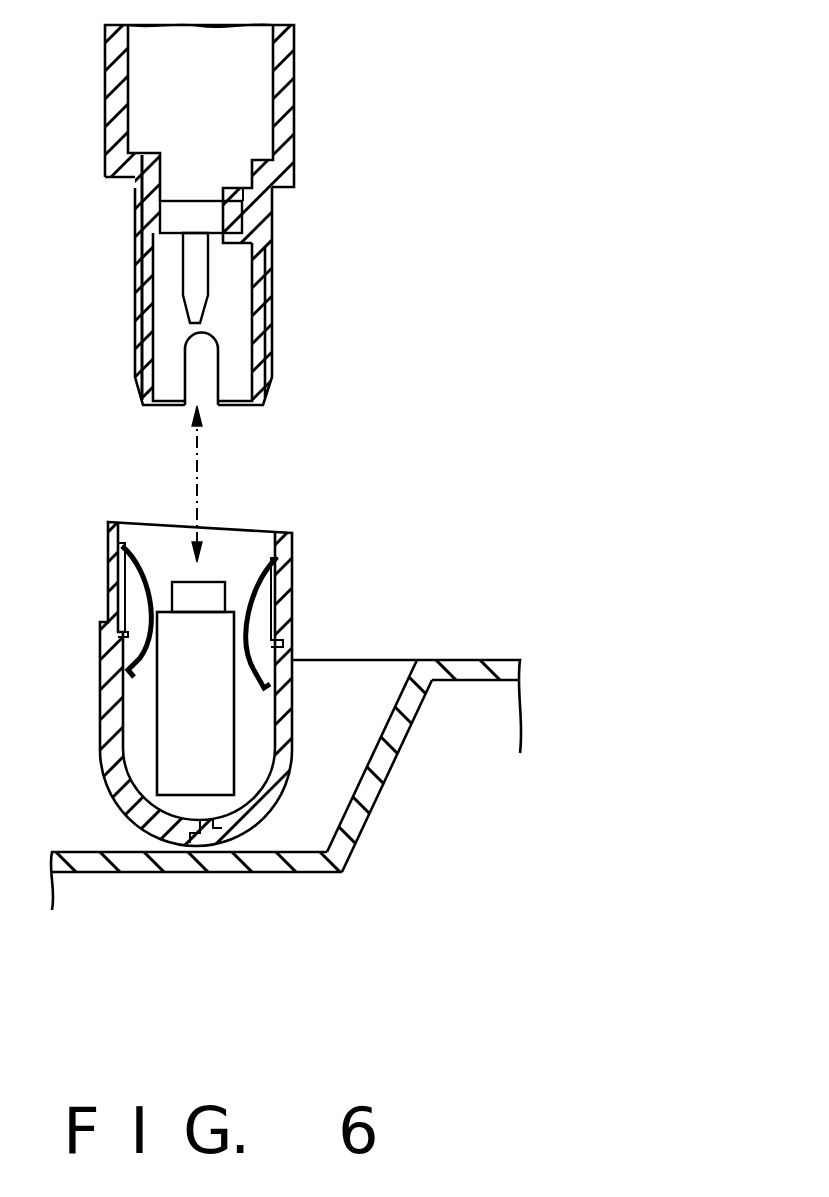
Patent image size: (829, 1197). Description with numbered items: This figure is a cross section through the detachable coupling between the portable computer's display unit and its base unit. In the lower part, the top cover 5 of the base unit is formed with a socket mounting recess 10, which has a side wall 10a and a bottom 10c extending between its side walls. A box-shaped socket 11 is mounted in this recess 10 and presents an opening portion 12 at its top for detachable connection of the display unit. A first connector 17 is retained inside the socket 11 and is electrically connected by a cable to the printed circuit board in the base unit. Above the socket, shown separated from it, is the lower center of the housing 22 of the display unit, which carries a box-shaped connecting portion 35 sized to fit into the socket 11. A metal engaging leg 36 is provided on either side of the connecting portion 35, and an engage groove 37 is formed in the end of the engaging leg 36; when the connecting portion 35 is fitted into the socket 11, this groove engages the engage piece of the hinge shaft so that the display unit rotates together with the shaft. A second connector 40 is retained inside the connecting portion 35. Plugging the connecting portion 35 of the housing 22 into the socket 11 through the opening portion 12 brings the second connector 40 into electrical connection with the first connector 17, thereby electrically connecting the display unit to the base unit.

The housing 22 is at (285, 112).
The second connector 40 is at (185, 198).
The connecting portion 35 is at (148, 322).
The engaging leg 36 is at (235, 305).
The engage groove 37 is at (212, 380).
The opening portion 12 is at (157, 547).
The socket 11 is at (133, 743).
The first connector 17 is at (193, 778).
The socket mounting recess 10 is at (323, 793).
The side wall 10a is at (363, 678).
The bottom 10c is at (297, 863).
The top cover 5 is at (493, 662).